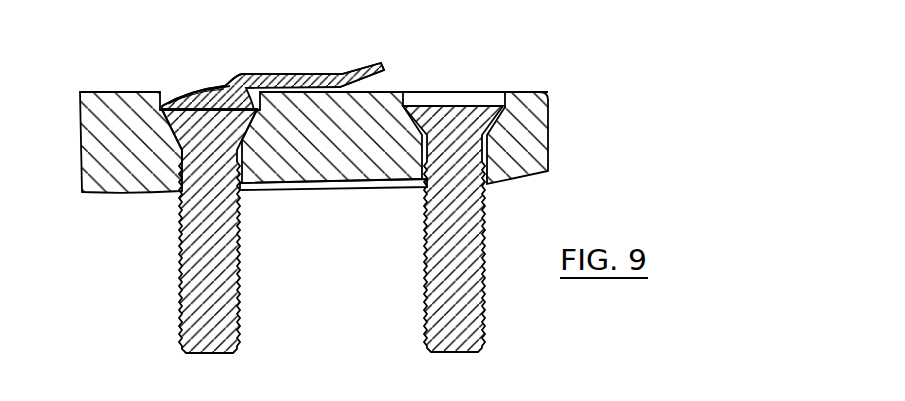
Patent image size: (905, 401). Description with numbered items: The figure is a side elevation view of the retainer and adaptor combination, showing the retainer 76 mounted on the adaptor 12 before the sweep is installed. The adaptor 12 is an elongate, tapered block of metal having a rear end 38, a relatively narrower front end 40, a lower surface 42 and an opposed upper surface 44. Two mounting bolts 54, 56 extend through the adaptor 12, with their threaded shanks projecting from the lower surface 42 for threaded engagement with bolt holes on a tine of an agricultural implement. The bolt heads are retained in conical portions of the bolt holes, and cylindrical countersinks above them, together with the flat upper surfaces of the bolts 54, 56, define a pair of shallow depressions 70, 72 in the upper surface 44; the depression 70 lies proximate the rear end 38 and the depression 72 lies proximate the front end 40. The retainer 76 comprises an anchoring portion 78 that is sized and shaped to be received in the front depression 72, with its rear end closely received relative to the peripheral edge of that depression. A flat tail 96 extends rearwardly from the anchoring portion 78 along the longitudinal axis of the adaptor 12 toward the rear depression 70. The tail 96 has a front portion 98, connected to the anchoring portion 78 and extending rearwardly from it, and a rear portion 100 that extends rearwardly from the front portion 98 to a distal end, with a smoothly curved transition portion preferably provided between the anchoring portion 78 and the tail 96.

The adaptor 12 is at (101, 84).
The rear end 38 is at (550, 143).
The front end 40 is at (78, 123).
The lower surface 42 is at (323, 186).
The upper surface 44 is at (388, 92).
The mounting bolt 54 is at (482, 250).
The mounting bolt 56 is at (238, 249).
The depression 70 is at (463, 95).
The depression 72 is at (170, 95).
The retainer 76 is at (219, 63).
The anchoring portion 78 is at (207, 88).
The tail 96 is at (247, 61).
The front portion 98 is at (295, 74).
The rear portion 100 is at (353, 66).